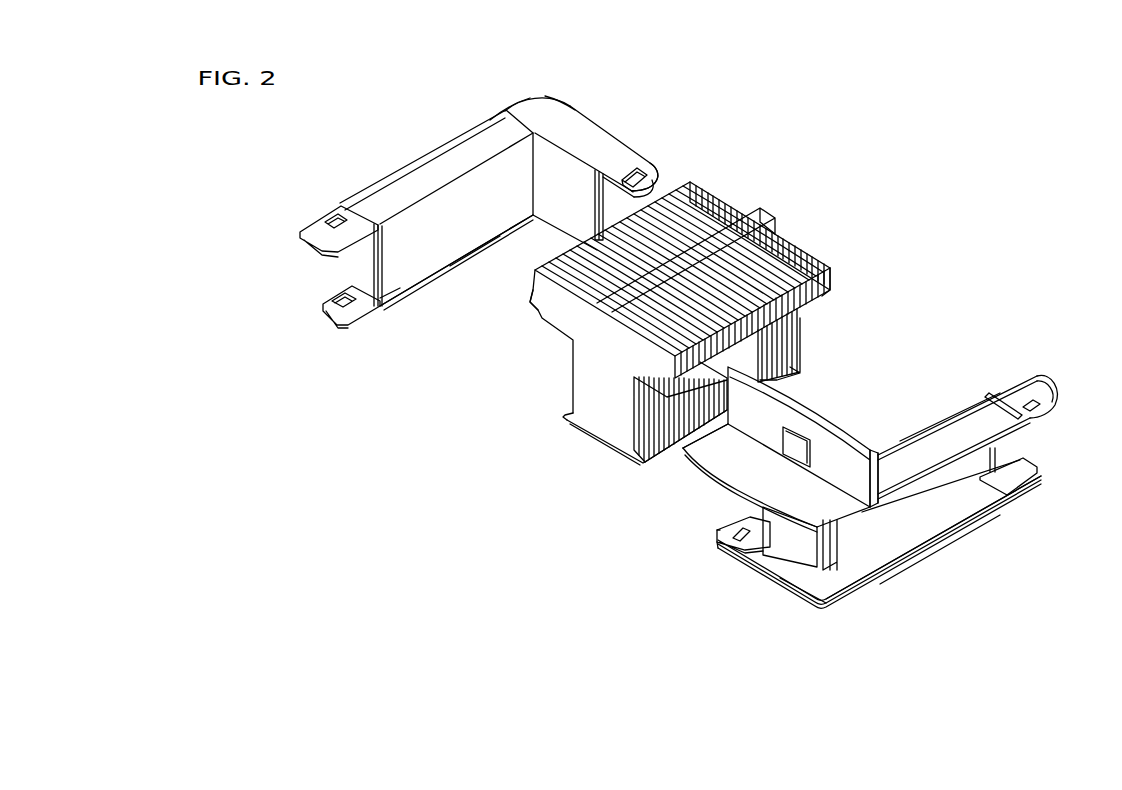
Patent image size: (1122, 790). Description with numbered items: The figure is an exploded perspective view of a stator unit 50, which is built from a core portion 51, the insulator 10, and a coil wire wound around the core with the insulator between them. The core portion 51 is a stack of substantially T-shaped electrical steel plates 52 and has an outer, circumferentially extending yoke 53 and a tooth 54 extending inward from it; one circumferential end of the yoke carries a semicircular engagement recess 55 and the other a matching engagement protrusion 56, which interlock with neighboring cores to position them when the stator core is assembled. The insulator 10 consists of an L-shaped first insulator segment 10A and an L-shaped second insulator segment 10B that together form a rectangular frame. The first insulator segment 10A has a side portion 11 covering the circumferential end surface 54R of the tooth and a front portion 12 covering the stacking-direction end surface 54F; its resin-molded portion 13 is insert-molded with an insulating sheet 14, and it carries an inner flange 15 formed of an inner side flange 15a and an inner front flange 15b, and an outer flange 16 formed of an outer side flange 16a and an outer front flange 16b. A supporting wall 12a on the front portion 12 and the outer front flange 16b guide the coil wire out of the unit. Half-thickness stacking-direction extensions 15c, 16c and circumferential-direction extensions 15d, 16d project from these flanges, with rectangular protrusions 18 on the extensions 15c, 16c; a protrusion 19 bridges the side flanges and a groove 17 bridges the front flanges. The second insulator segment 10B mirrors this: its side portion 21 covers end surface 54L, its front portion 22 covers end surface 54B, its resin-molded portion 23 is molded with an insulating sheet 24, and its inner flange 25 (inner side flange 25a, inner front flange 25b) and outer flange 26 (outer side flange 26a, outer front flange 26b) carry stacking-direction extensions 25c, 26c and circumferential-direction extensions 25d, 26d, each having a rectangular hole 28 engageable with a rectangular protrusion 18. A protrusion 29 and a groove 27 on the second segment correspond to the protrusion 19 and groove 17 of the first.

The insulator 10 is at (278, 558).
The first insulator segment 10A is at (760, 623).
The second insulator segment 10B is at (315, 360).
The side portion 11 is at (920, 505).
The front portion 12 is at (793, 540).
The supporting wall 12a is at (790, 410).
The resin-molded portion 13 is at (710, 483).
The insulating sheet 14 is at (935, 458).
The inner flange 15 is at (813, 662).
The inner side flange 15a is at (880, 585).
The inner front flange 15b is at (807, 582).
The stacking-direction extension 15c is at (1037, 461).
The circumferential-direction extension 15d is at (717, 533).
The outer flange 16 is at (872, 388).
The outer side flange 16a is at (980, 433).
The outer front flange 16b is at (870, 450).
The stacking-direction extension 16c is at (1048, 380).
The circumferential-direction extension 16d is at (681, 452).
The groove 17 is at (760, 512).
The rectangular protrusion 18 is at (740, 537).
The protrusion 19 is at (990, 394).
The side portion 21 is at (453, 195).
The front portion 22 is at (533, 217).
The resin-molded portion 23 is at (588, 127).
The insulating sheet 24 is at (462, 150).
The inner flange 25 is at (415, 408).
The inner side flange 25a is at (370, 293).
The inner front flange 25b is at (610, 217).
The stacking-direction extension 25c is at (323, 311).
The outer flange 26 is at (487, 68).
The outer side flange 26a is at (487, 122).
The outer front flange 26b is at (575, 123).
The stacking-direction extension 26c is at (316, 233).
The circumferential-direction extension 26d is at (648, 162).
The groove 27 is at (603, 200).
The rectangular hole 28 is at (326, 217).
The protrusion 29 is at (372, 258).
The stator unit 50 is at (937, 144).
The core portion 51 is at (816, 231).
The electrical steel plate 52 is at (717, 213).
The yoke 53 is at (553, 317).
The tooth 54 is at (568, 418).
The stacking-direction end surface 54B is at (793, 343).
The stacking-direction end surface 54F is at (603, 422).
The circumferential-direction end surface 54L is at (567, 416).
The circumferential-direction end surface 54R is at (632, 452).
The engagement recess 55 is at (533, 300).
The engagement protrusion 56 is at (833, 283).